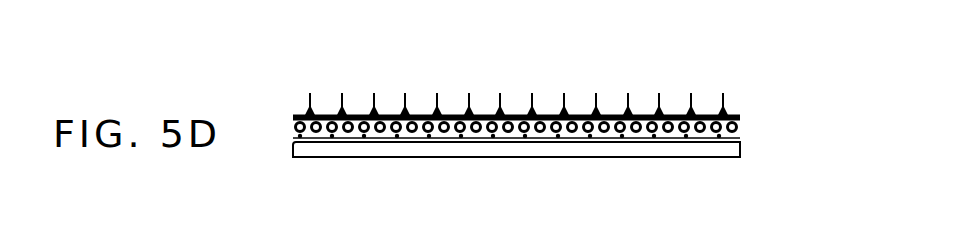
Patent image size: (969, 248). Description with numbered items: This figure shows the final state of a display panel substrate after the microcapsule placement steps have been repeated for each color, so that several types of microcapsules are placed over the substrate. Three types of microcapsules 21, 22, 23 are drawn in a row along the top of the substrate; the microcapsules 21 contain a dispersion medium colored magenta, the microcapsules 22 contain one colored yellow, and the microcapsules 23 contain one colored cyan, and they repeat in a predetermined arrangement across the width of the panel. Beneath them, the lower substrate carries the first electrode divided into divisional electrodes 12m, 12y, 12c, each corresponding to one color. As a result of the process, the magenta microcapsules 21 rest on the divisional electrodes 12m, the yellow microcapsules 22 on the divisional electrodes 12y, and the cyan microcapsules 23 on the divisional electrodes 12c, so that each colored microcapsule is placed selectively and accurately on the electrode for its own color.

The microcapsule 21 is at (500, 92).
The microcapsule 22 is at (532, 92).
The microcapsule 23 is at (516, 92).
The divisional electrode 12m is at (318, 138).
The divisional electrode 12y is at (352, 138).
The divisional electrode 12c is at (382, 138).